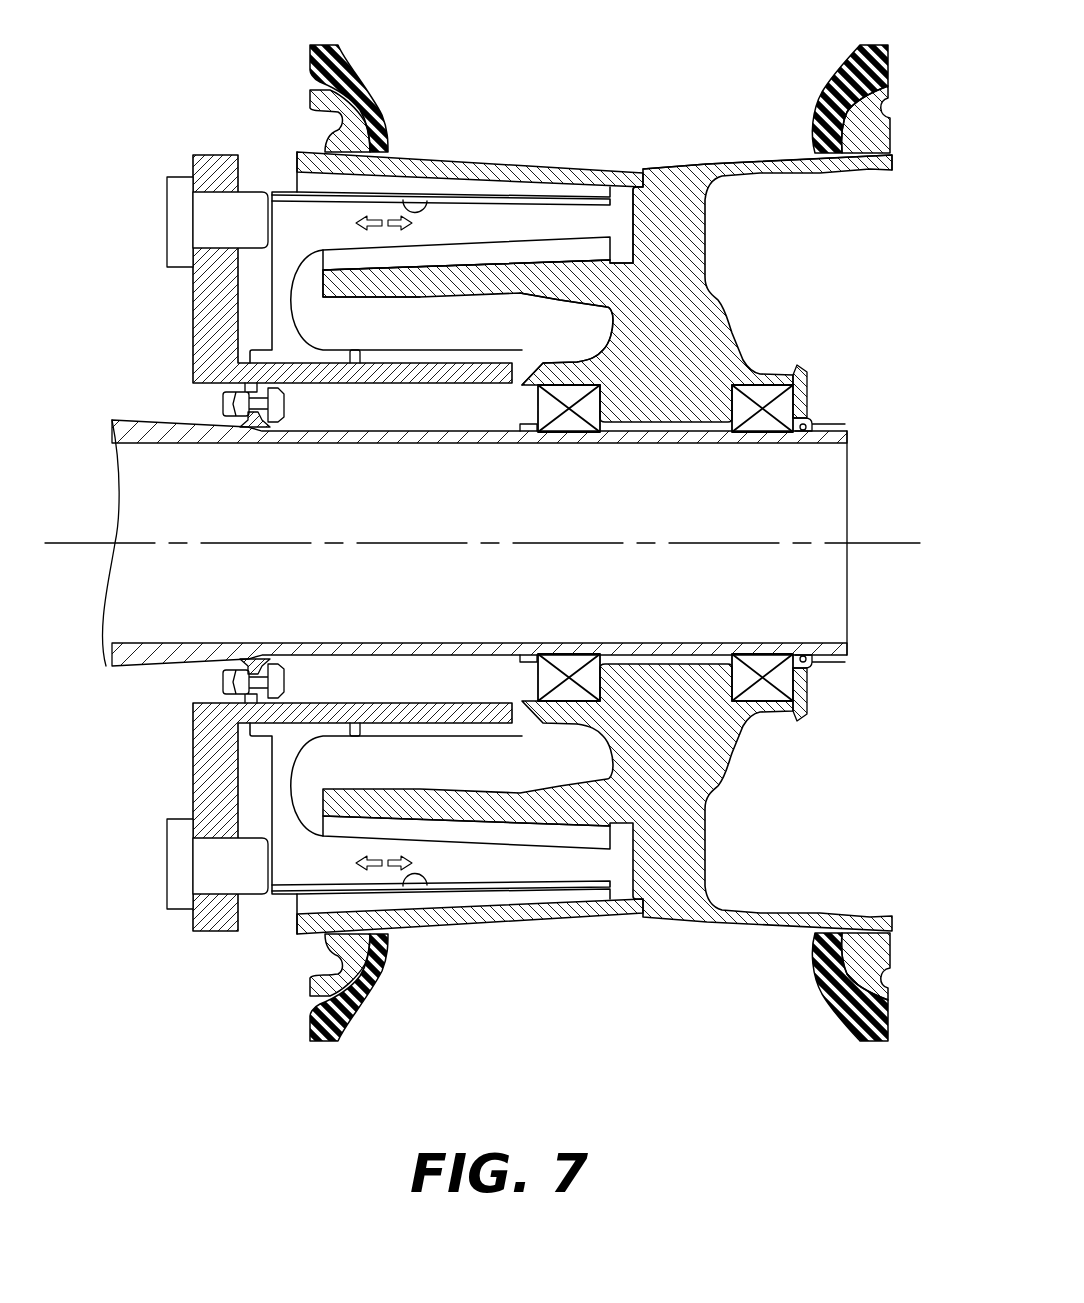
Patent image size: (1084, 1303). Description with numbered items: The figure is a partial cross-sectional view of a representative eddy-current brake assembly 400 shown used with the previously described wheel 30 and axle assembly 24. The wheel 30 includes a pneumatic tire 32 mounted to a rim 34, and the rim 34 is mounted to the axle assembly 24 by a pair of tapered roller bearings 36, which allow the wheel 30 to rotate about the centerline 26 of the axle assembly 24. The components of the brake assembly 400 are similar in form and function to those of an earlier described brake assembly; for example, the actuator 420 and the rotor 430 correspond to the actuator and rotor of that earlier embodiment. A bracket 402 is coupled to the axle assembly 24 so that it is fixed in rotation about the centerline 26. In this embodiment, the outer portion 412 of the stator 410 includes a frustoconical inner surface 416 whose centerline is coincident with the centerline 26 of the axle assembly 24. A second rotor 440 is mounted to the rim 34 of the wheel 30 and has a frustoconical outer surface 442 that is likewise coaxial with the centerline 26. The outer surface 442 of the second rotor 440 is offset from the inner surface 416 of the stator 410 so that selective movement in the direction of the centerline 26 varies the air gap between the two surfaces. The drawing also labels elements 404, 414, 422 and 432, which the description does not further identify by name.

The axle assembly 24 is at (180, 667).
The centerline 26 is at (877, 543).
The wheel 30 is at (906, 94).
The pneumatic tire 32 is at (895, 57).
The rim 34 is at (735, 332).
The tapered roller bearings 36 is at (612, 437).
The brake assembly 400 is at (190, 130).
The bracket 402 is at (195, 314).
The base plate 404 is at (354, 362).
The stator 410 is at (290, 327).
The outer portion 412 is at (553, 210).
The sleeve 414 is at (500, 197).
The frustoconical inner surface 416 is at (513, 270).
The actuator 420 is at (172, 220).
The bolt 422 is at (253, 200).
The rotor 430 is at (458, 190).
The ring 432 is at (423, 193).
The second rotor 440 is at (553, 293).
The frustoconical outer surface 442 is at (633, 220).